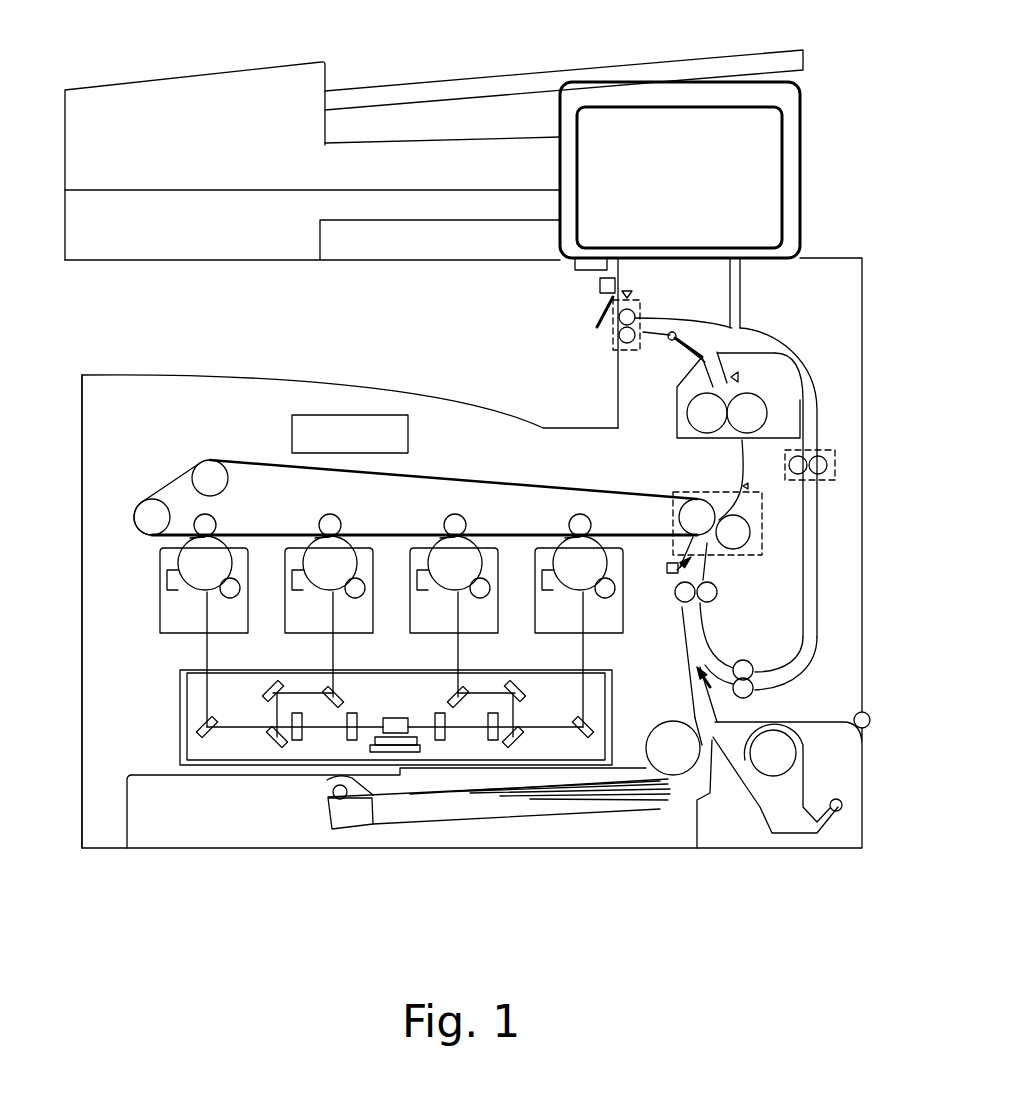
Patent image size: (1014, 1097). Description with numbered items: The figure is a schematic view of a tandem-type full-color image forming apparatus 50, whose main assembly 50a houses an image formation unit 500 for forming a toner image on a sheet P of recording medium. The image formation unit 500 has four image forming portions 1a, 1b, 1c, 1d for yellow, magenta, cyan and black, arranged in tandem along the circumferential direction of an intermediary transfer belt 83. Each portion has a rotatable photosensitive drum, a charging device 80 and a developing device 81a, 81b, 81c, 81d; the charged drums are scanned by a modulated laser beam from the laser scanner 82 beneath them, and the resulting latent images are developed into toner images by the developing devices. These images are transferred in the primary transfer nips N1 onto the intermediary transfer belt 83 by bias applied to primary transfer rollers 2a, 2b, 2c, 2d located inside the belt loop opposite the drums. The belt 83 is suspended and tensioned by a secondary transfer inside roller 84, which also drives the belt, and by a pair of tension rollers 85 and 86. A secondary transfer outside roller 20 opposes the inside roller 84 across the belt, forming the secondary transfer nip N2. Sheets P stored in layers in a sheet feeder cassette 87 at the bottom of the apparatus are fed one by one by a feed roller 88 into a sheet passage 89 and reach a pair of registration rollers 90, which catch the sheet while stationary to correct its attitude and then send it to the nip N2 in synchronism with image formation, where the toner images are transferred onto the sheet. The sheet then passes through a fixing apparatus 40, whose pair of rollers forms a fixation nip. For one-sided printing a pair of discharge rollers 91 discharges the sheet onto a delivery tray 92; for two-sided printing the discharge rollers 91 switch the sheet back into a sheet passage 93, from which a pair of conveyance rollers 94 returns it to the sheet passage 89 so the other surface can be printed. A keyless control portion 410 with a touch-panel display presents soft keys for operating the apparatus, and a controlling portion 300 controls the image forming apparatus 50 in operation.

The keyless control portion 410 is at (715, 130).
The image forming apparatus 50 is at (879, 275).
The main assembly 50a is at (80, 545).
The delivery tray 92 is at (352, 377).
The pair of discharge rollers 91 is at (606, 340).
The sheet passage for the two-sided mode 93 is at (807, 365).
The fixing apparatus 40 is at (782, 406).
The pair of conveyance rollers 94 is at (835, 463).
The secondary transfer nip N2 is at (720, 527).
The secondary transfer outside roller 20 is at (745, 533).
The secondary transfer inside roller 84 is at (682, 512).
The pair of registration rollers 90 is at (720, 580).
The sheet passage 89 is at (710, 683).
The feed roller 88 is at (677, 765).
The sheet of recording medium P is at (500, 800).
The sheet feeder cassette 87 is at (118, 811).
The laser scanner unit 82 is at (172, 740).
The image forming portion 1a is at (180, 602).
The image forming portion 1b is at (314, 603).
The image forming portion 1c is at (439, 603).
The image forming portion 1d is at (564, 603).
The developing device 81a is at (193, 583).
The developing device 81b is at (318, 583).
The developing device 81c is at (443, 583).
The developing device 81d is at (568, 583).
The charging device 80 is at (228, 598).
The primary transfer roller 2a is at (217, 527).
The primary transfer roller 2b is at (347, 527).
The primary transfer roller 2c is at (467, 527).
The primary transfer roller 2d is at (570, 525).
The primary transfer nip N1 is at (187, 540).
The intermediary transfer belt 83 is at (170, 478).
The tension roller 85 is at (207, 463).
The tension roller 86 is at (140, 517).
The image formation unit 500 is at (536, 473).
The controlling portion 300 is at (408, 433).